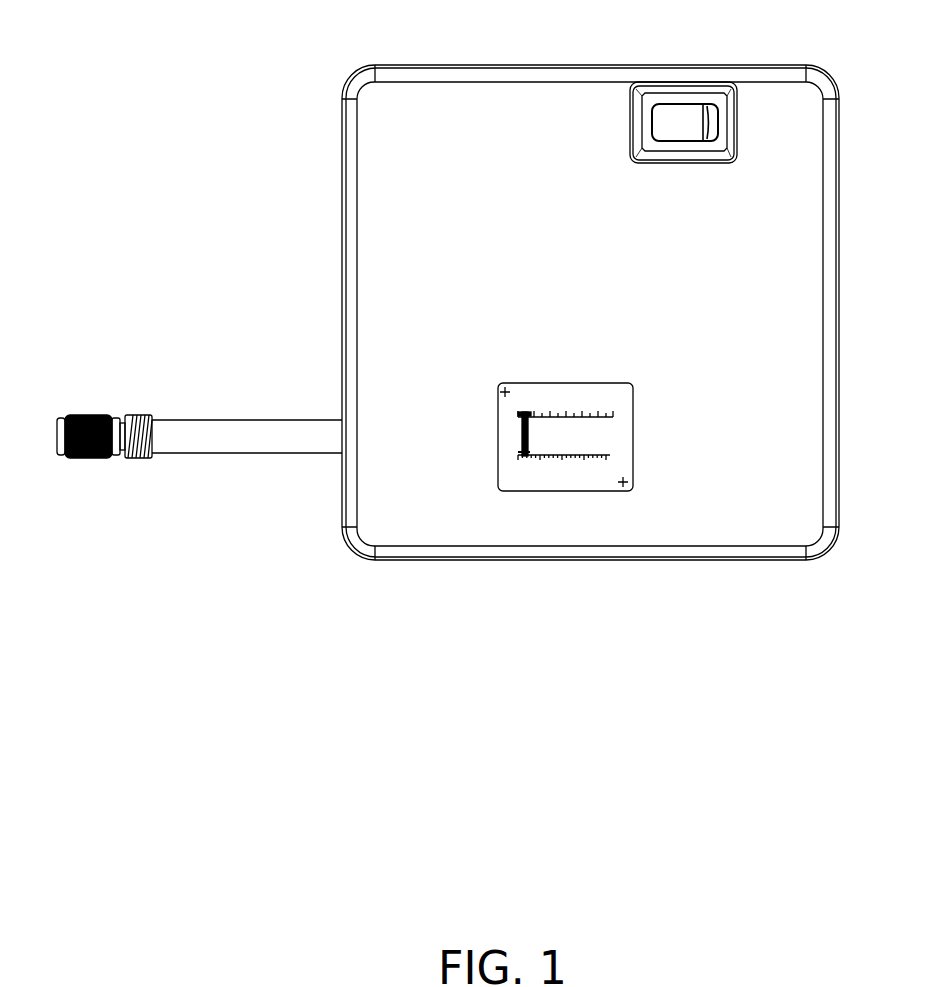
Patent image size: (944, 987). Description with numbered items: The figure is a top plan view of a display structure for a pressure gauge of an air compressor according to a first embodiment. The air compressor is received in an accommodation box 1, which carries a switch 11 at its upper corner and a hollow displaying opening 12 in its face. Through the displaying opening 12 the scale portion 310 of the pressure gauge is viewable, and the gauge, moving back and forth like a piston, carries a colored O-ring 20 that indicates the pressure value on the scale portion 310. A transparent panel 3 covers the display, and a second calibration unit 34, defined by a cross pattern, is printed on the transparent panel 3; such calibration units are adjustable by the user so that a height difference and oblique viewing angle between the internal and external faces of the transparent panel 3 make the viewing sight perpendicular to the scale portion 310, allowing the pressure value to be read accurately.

The accommodation box 1 is at (452, 512).
The switch 11 is at (684, 118).
The transparent panel 3 is at (509, 484).
The scale portion 310 is at (560, 397).
The colored O-ring 20 is at (523, 432).
The hollow displaying opening 12 is at (563, 492).
The second calibration unit 34 is at (627, 488).